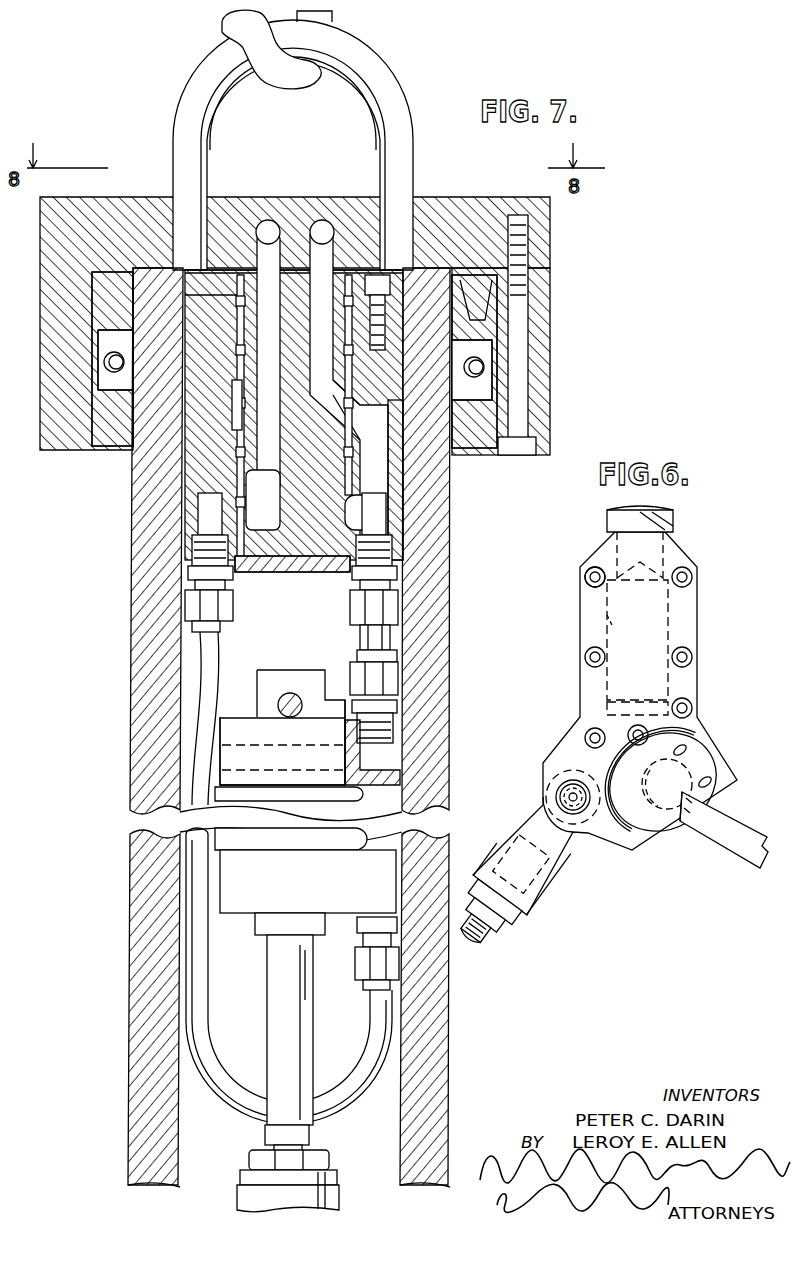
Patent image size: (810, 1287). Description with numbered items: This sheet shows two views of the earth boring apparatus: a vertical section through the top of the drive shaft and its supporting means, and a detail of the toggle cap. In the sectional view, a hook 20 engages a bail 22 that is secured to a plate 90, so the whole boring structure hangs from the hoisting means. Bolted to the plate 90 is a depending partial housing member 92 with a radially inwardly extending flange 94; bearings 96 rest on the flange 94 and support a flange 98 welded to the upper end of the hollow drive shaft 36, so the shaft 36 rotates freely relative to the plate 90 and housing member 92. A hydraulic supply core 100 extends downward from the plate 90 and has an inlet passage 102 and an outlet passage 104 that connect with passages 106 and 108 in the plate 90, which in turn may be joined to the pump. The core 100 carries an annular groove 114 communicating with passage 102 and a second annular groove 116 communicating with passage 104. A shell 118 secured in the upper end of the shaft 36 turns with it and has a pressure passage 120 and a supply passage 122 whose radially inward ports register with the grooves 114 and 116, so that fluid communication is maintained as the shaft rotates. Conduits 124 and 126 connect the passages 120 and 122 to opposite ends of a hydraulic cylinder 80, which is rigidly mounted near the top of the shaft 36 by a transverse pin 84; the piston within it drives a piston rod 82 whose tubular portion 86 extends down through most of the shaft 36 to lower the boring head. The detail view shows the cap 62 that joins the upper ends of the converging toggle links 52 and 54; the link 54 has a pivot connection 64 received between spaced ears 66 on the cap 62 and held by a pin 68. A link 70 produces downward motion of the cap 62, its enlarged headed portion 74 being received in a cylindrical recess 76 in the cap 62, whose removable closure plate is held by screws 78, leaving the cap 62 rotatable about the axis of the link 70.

In FIG. 7, the hook 20 is at (279, 88).
In FIG. 7, the bail 22 is at (400, 93).
In FIG. 7, the hollow drive shaft 36 is at (133, 645).
In FIG. 6, the link 52 is at (722, 856).
In FIG. 6, the link 54 is at (492, 940).
In FIG. 6, the cap 62 is at (697, 641).
In FIG. 6, the pivot connection 64 is at (560, 870).
In FIG. 6, the spaced ears 66 is at (548, 790).
In FIG. 6, the pin 68 is at (578, 812).
In FIG. 6, the link 70 is at (668, 520).
In FIG. 6, the enlarged headed portion 74 is at (670, 615).
In FIG. 6, the cylindrical recess 76 is at (606, 620).
In FIG. 6, the screws 78 is at (587, 578).
In FIG. 7, the hydraulic cylinder 80 is at (205, 843).
In FIG. 7, the piston rod 82 is at (270, 1000).
In FIG. 7, the transverse pin 84 is at (262, 700).
In FIG. 7, the tubular portion 86 is at (336, 1188).
In FIG. 7, the plate 90 is at (106, 196).
In FIG. 7, the partial housing member 92 is at (546, 374).
In FIG. 7, the flange 94 is at (116, 398).
In FIG. 7, the bearings 96 is at (512, 380).
In FIG. 7, the flange 98 is at (486, 309).
In FIG. 7, the hydraulic supply core 100 is at (296, 545).
In FIG. 7, the inlet passage 102 is at (260, 456).
In FIG. 7, the outlet passage 104 is at (372, 262).
In FIG. 7, the passage 106 is at (268, 220).
In FIG. 7, the passage 108 is at (322, 220).
In FIG. 7, the annular groove 114 is at (386, 516).
In FIG. 7, the second annular groove 116 is at (237, 410).
In FIG. 7, the shell 118 is at (398, 486).
In FIG. 7, the pressure passage 120 is at (192, 521).
In FIG. 7, the supply passage 122 is at (397, 525).
In FIG. 7, the hydraulic conduit 124 is at (198, 672).
In FIG. 7, the hydraulic conduit 126 is at (400, 637).